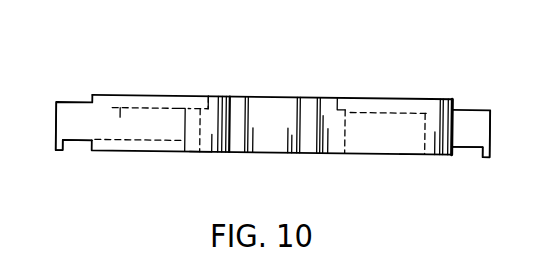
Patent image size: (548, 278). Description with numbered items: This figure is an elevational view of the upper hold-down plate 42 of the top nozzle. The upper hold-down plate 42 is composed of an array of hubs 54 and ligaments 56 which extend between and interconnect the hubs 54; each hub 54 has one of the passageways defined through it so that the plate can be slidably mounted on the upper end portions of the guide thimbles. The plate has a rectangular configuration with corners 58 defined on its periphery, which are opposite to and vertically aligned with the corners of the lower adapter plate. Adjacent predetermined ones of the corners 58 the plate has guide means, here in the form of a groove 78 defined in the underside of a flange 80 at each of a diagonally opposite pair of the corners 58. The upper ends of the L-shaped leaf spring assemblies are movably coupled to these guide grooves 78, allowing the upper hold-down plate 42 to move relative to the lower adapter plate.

The upper hold-down plate 42 is at (395, 85).
The hubs 54 is at (207, 152).
The ligaments 56 is at (310, 97).
The corners 58 is at (135, 100).
The groove 78 is at (148, 140).
The flange 80 is at (55, 123).